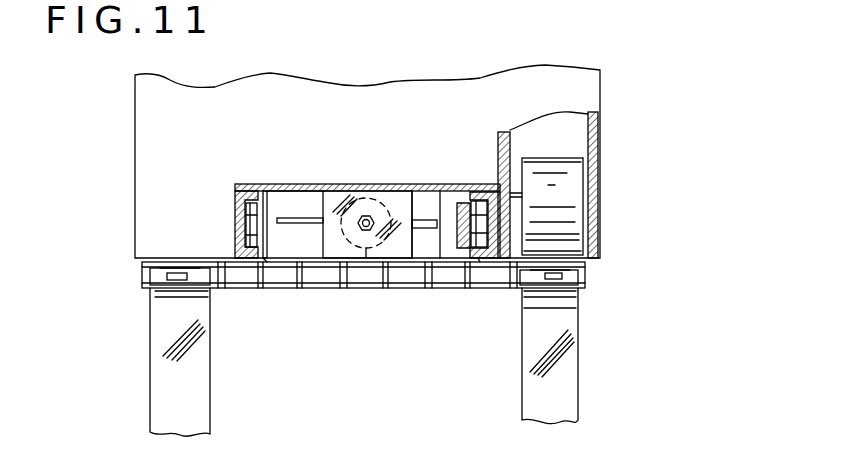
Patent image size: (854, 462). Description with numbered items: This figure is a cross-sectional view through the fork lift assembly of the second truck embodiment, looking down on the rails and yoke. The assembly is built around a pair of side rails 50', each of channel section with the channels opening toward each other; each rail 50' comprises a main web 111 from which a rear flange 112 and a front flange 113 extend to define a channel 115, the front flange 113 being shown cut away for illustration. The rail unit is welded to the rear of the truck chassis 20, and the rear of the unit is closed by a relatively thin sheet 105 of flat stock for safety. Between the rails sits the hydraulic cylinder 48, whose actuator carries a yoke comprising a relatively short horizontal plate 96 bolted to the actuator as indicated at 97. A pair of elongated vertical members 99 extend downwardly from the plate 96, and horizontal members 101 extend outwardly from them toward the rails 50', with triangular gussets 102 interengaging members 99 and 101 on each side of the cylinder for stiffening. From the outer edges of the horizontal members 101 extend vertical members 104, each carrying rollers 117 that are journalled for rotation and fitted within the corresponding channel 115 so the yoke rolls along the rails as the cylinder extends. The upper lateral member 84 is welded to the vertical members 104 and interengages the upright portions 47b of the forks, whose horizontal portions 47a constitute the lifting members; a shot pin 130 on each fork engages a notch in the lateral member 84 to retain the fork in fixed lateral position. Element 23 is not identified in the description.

The truck chassis 20 is at (602, 123).
The housing box 23 is at (560, 158).
The horizontal portion 47a is at (210, 353).
The upright portion 47b is at (150, 294).
The hydraulic cylinder 48 is at (376, 172).
The side rail 50' is at (351, 267).
The upper lateral member 84 is at (416, 230).
The horizontal plate 96 is at (388, 236).
The bolt 97 is at (368, 212).
The vertical member 99 is at (325, 258).
The horizontal member 101 is at (268, 186).
The gusset 102 is at (324, 195).
The vertical member 104 is at (300, 224).
The sheet 105 is at (300, 186).
The main web 111 is at (236, 214).
The rear flange 112 is at (250, 186).
The front flange 113 is at (264, 258).
The channel 115 is at (254, 238).
The roller 117 is at (236, 212).
The shot pin 130 is at (188, 276).